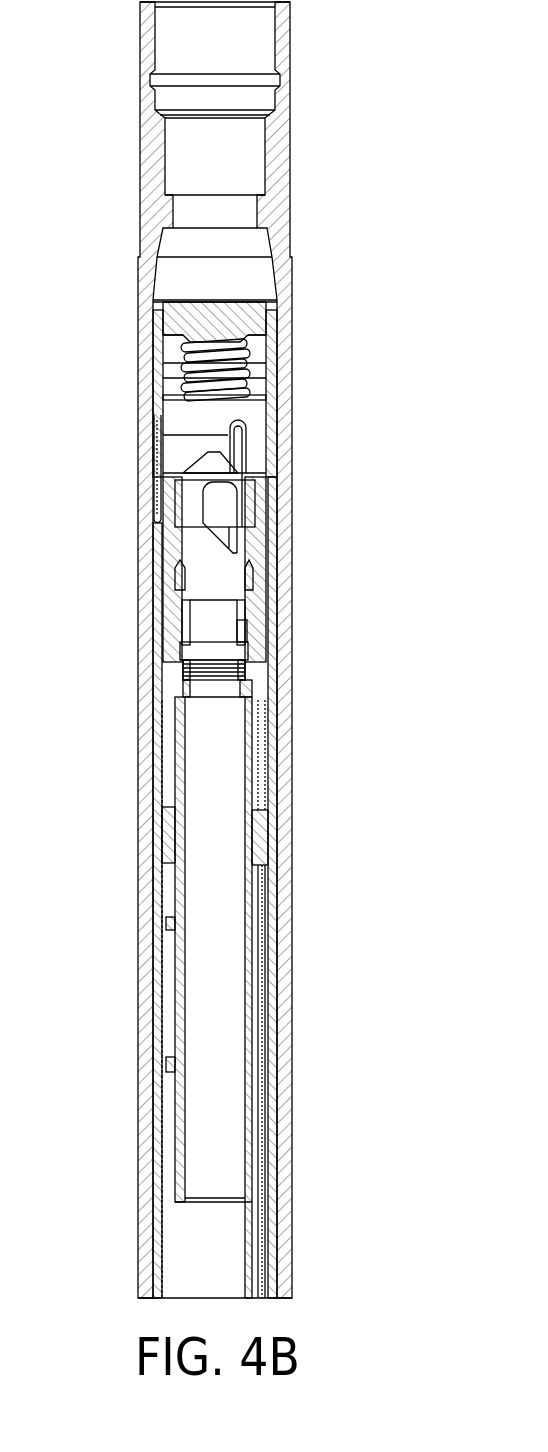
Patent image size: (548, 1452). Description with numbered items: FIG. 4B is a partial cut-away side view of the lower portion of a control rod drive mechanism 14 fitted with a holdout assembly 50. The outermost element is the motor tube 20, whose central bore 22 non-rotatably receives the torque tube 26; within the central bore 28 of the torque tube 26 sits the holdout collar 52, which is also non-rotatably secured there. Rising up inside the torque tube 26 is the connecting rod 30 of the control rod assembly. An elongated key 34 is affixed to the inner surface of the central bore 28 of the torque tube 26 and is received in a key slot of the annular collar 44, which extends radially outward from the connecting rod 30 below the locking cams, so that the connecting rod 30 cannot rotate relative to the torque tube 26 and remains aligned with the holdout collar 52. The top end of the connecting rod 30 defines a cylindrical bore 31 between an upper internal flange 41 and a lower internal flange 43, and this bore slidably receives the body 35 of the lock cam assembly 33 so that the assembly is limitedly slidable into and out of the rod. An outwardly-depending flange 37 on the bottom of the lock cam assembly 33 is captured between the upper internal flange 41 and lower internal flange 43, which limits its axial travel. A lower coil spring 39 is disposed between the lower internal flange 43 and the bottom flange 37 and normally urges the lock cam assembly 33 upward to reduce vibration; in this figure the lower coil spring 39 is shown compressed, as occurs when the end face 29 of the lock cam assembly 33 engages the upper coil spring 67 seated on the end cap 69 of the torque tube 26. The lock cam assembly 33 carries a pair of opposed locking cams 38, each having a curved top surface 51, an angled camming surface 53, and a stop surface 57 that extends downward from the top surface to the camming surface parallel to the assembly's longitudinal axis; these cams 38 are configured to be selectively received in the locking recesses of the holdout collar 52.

The control rod drive mechanism 14 is at (106, 305).
The motor tube 20 is at (142, 1040).
The central bore of motor tube 22 is at (166, 891).
The torque tube 26 is at (160, 665).
The central bore of torque tube 28 is at (167, 694).
The end face of lock cam assembly 29 is at (187, 480).
The connecting rod 30 is at (225, 1090).
The cylindrical bore 31 is at (243, 641).
The lock cam assembly 33 is at (268, 460).
The elongated key 34 is at (268, 902).
The body of lock cam assembly 35 is at (208, 573).
The outwardly-depending flange 37 is at (183, 655).
The locking cam 38 is at (215, 508).
The lower coil spring 39 is at (250, 675).
The upper internal flange 41 is at (190, 612).
The lower internal flange 43 is at (185, 690).
The annular collar 44 is at (305, 828).
The holdout assembly 50 is at (326, 572).
The curved top surface 51 is at (242, 433).
The holdout collar 52 is at (170, 590).
The angled camming surface 53 is at (242, 594).
The stop surface 57 is at (264, 505).
The upper coil spring 67 is at (245, 358).
The end cap 69 is at (185, 318).